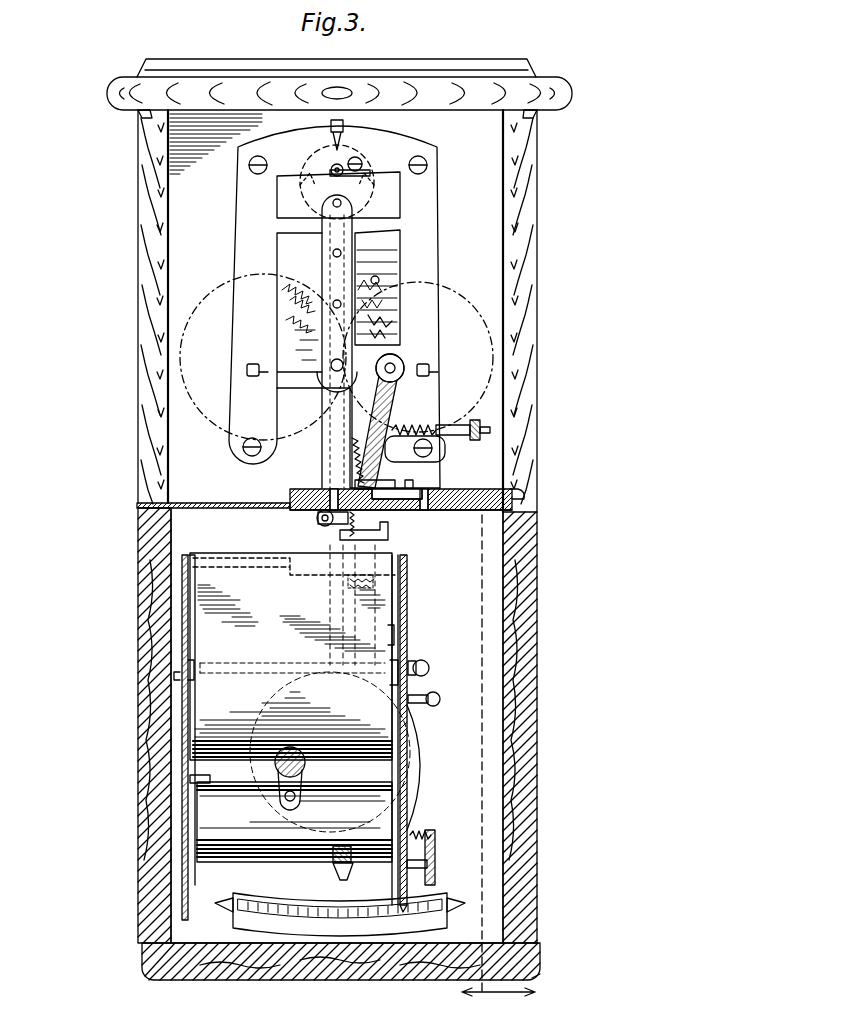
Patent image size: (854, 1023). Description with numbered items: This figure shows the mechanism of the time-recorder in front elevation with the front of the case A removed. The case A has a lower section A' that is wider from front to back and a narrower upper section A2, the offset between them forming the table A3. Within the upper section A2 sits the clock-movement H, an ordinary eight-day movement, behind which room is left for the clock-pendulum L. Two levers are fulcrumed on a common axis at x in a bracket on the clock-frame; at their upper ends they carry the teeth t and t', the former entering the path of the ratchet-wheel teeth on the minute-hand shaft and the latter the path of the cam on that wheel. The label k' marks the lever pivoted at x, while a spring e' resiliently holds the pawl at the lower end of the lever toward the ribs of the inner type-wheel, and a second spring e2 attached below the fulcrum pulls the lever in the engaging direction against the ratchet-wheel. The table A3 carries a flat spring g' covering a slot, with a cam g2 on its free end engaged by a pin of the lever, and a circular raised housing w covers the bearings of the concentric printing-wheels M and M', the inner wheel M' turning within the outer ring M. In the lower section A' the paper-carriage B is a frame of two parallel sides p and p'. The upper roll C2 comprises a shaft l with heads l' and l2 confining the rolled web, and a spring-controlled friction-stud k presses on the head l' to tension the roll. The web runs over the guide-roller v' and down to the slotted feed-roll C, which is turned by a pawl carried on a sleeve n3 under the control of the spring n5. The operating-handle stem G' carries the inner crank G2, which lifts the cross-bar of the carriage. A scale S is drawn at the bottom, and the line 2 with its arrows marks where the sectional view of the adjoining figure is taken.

The case A is at (352, 519).
The lower section of the case A' is at (337, 726).
The upper section of the case A2 is at (326, 184).
The table A3 is at (140, 505).
The clock-movement H is at (336, 304).
The tooth of lever K t is at (392, 283).
The tooth of lever K' t' is at (374, 265).
The friction-stud k is at (412, 496).
The lever k' is at (391, 411).
The fulcrum x is at (396, 375).
The spring e' is at (332, 454).
The spring e2 is at (441, 418).
The flat spring g' is at (410, 472).
The cam g2 is at (392, 462).
The housing w is at (548, 466).
The printing-wheel M is at (438, 496).
The inner printing-wheel M' is at (401, 528).
The guide-roller v' is at (366, 587).
The feed-roll C is at (294, 822).
The upper roll C2 is at (390, 600).
The shaft l is at (292, 671).
The head l' is at (410, 730).
The head l2 is at (182, 656).
The clock-pendulum L is at (410, 750).
The side piece p is at (152, 781).
The side piece p' is at (439, 710).
The paper-carriage B is at (435, 767).
The sleeve n3 is at (430, 862).
The controlling-spring n5 is at (422, 832).
The stem G' is at (312, 778).
The crank G2 is at (300, 802).
The scale S is at (340, 914).
The section line 2 is at (498, 765).